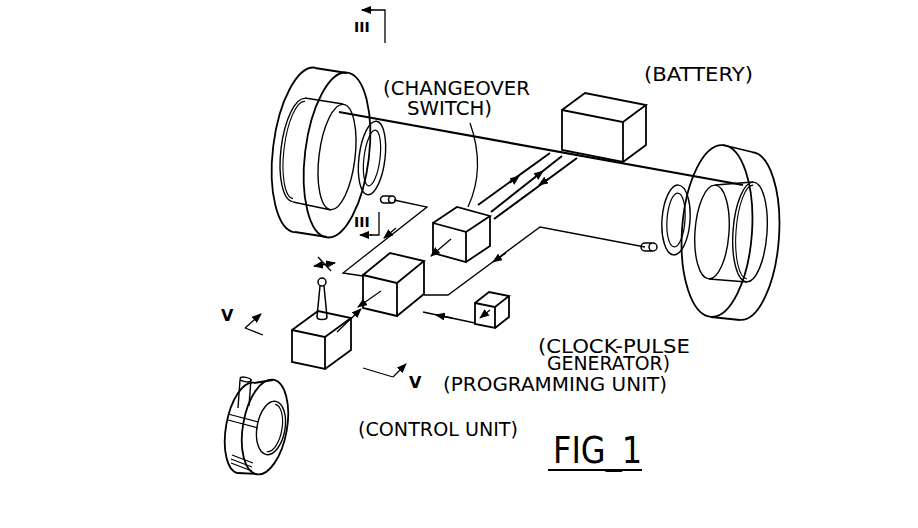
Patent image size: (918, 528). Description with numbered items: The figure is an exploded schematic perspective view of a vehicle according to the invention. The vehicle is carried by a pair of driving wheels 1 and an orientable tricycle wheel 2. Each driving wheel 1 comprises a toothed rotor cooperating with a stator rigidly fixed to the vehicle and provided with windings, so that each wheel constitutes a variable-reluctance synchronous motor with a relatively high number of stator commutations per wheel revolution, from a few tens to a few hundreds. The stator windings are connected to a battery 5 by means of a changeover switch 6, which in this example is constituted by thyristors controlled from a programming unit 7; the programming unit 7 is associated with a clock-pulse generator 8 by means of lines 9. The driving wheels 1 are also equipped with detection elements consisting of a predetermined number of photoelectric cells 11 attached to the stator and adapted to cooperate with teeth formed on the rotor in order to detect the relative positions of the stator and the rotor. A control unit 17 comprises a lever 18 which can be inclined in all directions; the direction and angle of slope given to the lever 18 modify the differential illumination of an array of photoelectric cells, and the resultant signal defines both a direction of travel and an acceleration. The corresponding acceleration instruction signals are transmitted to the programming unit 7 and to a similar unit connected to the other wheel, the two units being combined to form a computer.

The driving wheels 1 is at (293, 87).
The orientable tricycle wheel 2 is at (233, 443).
The battery 5 is at (619, 112).
The changeover switch 6 is at (462, 207).
The programming unit 7 is at (407, 316).
The clock-pulse generator 8 is at (505, 321).
The lines 9 is at (432, 259).
The photoelectric cells 11 is at (388, 196).
The control unit 17 is at (324, 379).
The lever 18 is at (318, 293).